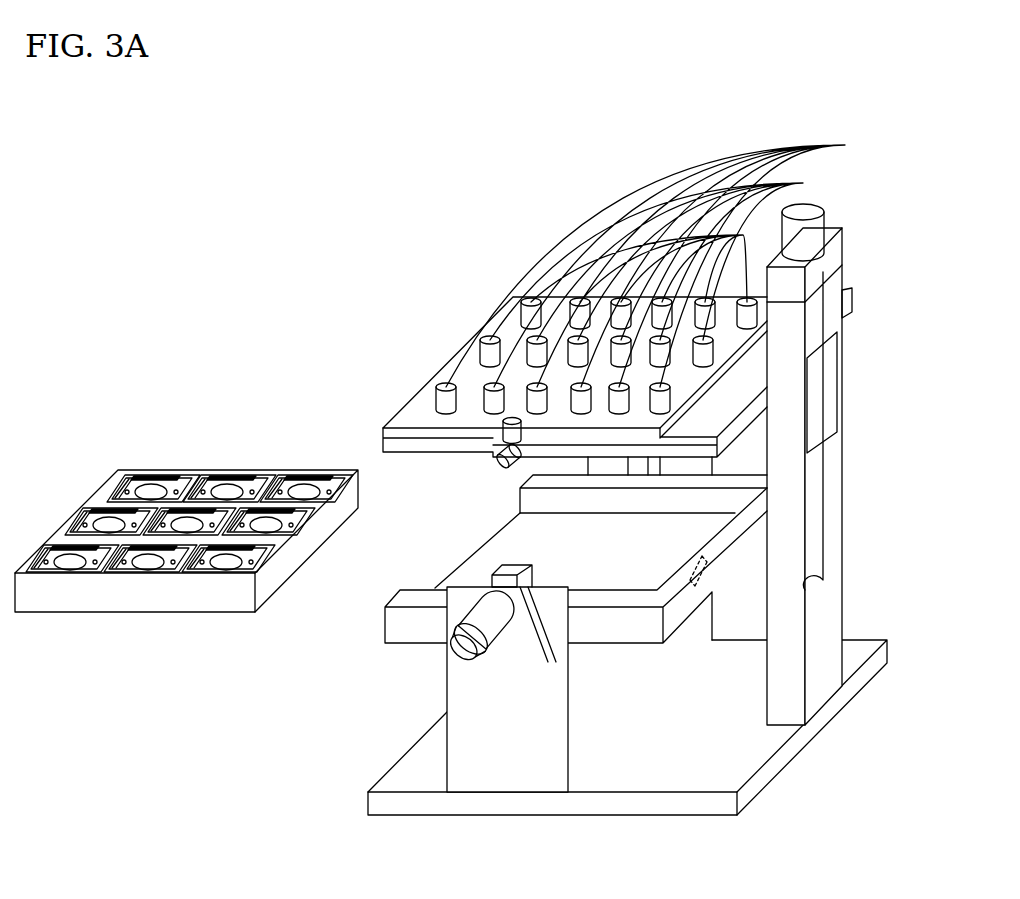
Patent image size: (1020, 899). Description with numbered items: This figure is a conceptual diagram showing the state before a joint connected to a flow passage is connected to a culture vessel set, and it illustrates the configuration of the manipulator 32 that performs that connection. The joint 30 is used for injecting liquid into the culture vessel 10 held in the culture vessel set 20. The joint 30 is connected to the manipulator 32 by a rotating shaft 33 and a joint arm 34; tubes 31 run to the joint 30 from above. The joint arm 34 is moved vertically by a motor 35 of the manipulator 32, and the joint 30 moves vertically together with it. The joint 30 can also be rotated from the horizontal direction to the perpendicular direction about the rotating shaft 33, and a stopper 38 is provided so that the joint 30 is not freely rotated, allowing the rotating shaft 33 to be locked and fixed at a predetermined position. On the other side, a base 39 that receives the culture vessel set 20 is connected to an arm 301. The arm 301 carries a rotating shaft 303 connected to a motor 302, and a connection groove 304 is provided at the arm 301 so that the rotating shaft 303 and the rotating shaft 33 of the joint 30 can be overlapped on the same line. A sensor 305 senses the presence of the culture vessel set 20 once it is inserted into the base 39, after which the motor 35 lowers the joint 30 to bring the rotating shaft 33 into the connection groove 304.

The culture vessel 10 is at (160, 490).
The culture vessel set 20 is at (293, 470).
The joint 30 is at (407, 403).
The tubes 31 is at (583, 225).
The manipulator 32 is at (704, 810).
The rotating shaft 33 is at (500, 457).
The joint arm 34 is at (736, 442).
The motor 35 is at (832, 378).
The stopper 38 is at (503, 422).
The base 39 is at (393, 628).
The arm 301 is at (568, 700).
The motor 302 is at (480, 630).
The rotating shaft 303 is at (513, 612).
The connection groove 304 is at (550, 662).
The sensor 305 is at (717, 577).